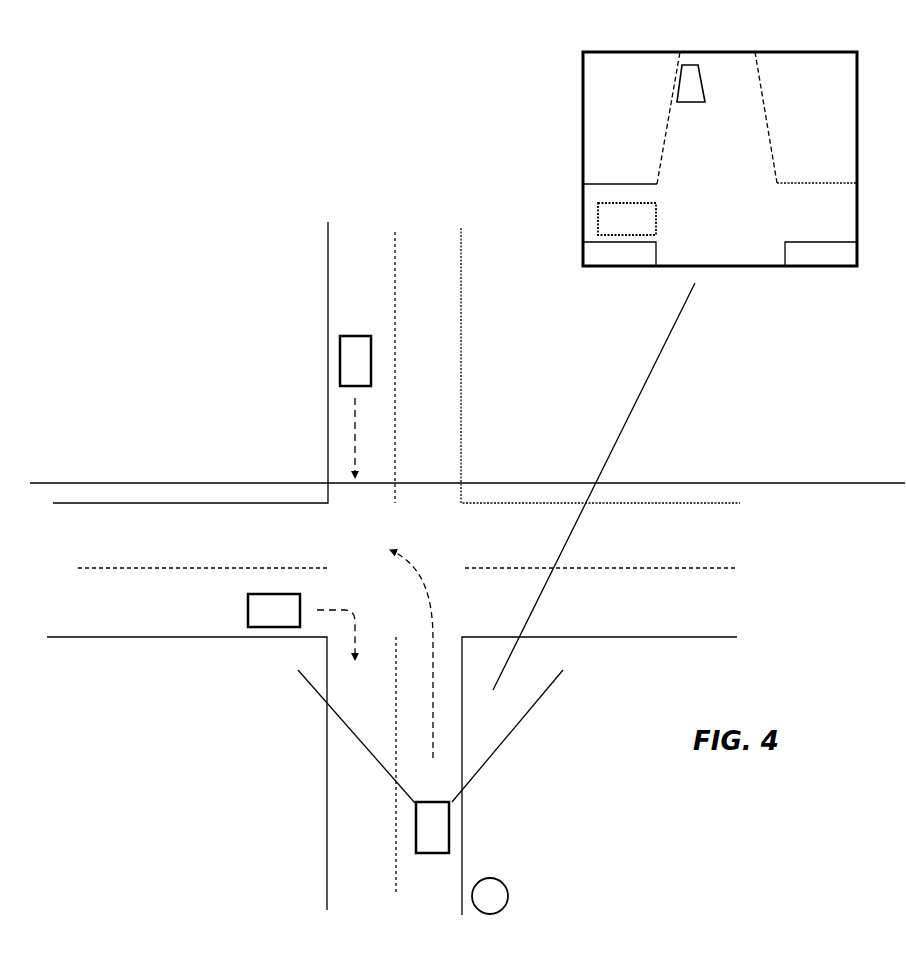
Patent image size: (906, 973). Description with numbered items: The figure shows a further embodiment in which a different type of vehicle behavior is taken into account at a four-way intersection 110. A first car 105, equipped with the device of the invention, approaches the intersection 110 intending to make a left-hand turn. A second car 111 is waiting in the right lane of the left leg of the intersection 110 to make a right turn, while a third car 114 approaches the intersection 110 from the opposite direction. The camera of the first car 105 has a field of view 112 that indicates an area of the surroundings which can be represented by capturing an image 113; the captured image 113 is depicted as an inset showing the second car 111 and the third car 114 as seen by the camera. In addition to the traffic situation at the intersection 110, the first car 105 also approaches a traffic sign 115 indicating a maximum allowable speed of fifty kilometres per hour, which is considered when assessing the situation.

The first car 105 is at (438, 838).
The four-way intersection 110 is at (480, 478).
The second car 111 is at (270, 618).
The field of view 112 is at (497, 735).
The image 113 is at (580, 115).
The third car 114 is at (343, 365).
The traffic sign 115 is at (510, 889).